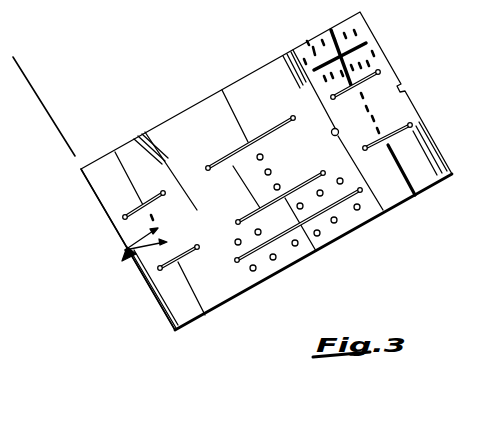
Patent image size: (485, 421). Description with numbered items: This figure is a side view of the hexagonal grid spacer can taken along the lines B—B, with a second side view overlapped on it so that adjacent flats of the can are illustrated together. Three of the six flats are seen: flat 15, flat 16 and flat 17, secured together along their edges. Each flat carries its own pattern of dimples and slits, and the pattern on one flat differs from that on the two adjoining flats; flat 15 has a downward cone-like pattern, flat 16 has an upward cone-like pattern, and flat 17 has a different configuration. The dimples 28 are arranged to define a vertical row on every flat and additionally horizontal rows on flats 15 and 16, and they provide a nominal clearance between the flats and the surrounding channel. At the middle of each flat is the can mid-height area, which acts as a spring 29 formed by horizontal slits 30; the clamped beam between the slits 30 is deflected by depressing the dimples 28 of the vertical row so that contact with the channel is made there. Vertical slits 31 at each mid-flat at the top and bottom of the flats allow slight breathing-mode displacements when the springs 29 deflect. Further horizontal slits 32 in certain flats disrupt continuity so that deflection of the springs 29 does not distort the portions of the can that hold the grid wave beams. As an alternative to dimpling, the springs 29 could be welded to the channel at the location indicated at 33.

The section line B— B is at (28, 81).
The flat 15 is at (427, 173).
The flat 16 is at (330, 230).
The flat 17 is at (123, 233).
The dimples 28 is at (345, 35).
The spring 29 is at (192, 235).
The horizontal slits 30 is at (230, 153).
The vertical slits 31 is at (198, 298).
The horizontal slits 32 is at (367, 42).
The weld 33 is at (237, 172).